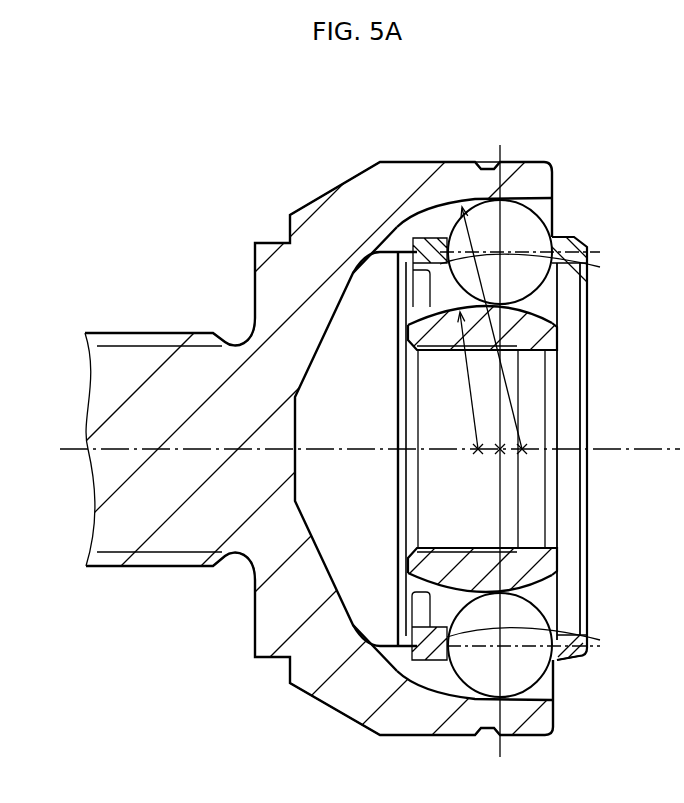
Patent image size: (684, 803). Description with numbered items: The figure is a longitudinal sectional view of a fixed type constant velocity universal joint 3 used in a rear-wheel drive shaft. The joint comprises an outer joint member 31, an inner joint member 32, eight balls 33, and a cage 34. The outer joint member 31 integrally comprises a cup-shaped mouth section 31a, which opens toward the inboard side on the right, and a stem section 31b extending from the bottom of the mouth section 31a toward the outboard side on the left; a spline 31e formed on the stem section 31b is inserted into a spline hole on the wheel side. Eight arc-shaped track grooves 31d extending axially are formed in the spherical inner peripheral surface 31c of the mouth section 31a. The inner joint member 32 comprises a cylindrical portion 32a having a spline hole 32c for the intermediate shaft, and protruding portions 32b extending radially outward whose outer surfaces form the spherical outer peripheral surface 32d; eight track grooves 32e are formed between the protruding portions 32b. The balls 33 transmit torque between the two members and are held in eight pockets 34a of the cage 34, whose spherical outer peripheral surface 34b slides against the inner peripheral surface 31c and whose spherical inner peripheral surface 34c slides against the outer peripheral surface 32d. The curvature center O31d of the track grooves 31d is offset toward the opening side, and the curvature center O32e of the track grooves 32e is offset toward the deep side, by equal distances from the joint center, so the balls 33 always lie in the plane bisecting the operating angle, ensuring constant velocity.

The fixed type constant velocity universal joint 3 is at (582, 124).
The outer joint member 31 is at (326, 192).
The mouth section 31a is at (467, 173).
The stem section 31b is at (128, 518).
The spherical inner peripheral surface 31c is at (398, 243).
The track grooves 31d is at (445, 220).
The spline 31e is at (143, 345).
The inner joint member 32 is at (541, 332).
The cylindrical portion 32a is at (537, 565).
The protruding portions 32b is at (551, 287).
The spline hole 32c is at (436, 354).
The spherical outer peripheral surface 32d is at (440, 638).
The track grooves 32e is at (432, 296).
The balls 33 is at (518, 222).
The cage 34 is at (593, 245).
The pockets 34a is at (549, 222).
The spherical outer peripheral surface 34b is at (568, 658).
The spherical inner peripheral surface 34c is at (570, 618).
The curvature center of the track grooves of the outer joint member O31d is at (522, 448).
The curvature center of the track grooves of the inner joint member O32e is at (478, 450).